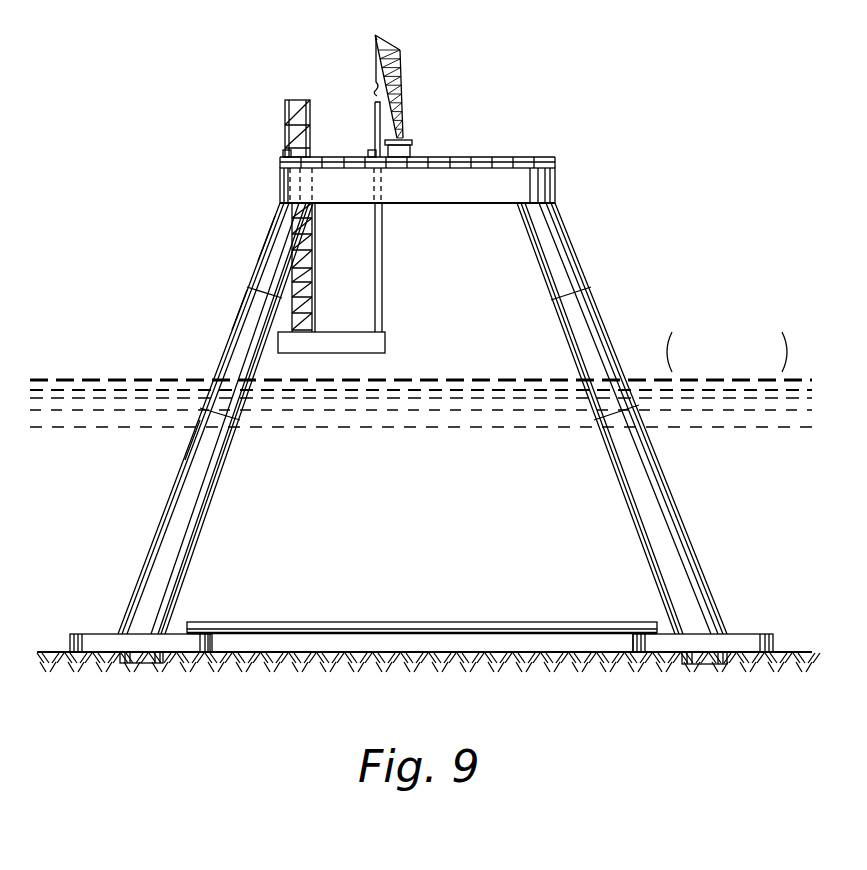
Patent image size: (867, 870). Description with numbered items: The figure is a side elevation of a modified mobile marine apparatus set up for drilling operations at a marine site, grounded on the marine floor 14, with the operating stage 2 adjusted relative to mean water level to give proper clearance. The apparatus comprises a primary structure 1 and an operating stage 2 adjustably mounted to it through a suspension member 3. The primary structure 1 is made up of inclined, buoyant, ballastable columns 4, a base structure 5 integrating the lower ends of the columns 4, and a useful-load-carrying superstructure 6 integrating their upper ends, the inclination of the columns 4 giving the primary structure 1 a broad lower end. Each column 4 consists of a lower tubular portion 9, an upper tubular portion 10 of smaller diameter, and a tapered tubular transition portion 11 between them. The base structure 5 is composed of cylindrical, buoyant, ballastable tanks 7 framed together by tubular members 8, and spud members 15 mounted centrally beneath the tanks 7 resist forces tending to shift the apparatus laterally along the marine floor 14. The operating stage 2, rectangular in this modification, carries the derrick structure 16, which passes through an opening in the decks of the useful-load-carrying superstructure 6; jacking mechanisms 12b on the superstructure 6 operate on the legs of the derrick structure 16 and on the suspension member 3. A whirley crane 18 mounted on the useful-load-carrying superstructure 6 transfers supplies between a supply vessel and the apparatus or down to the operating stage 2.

The primary structure 1 is at (172, 347).
The operating stage 2 is at (385, 343).
The suspension member 3 is at (383, 240).
The column 4 is at (233, 297).
The base structure 5 is at (403, 605).
The useful-load-carrying superstructure 6 is at (556, 186).
The tank 7 is at (97, 634).
The tubular member 8 is at (278, 624).
The lower tubular portion 9 is at (185, 487).
The upper tubular portion 10 is at (270, 247).
The tapered tubular transition portion 11 is at (233, 342).
The jacking mechanism 12b is at (283, 153).
The marine floor 14 is at (52, 648).
The spud member 15 is at (136, 657).
The derrick structure 16 is at (313, 118).
The whirley crane 18 is at (403, 105).